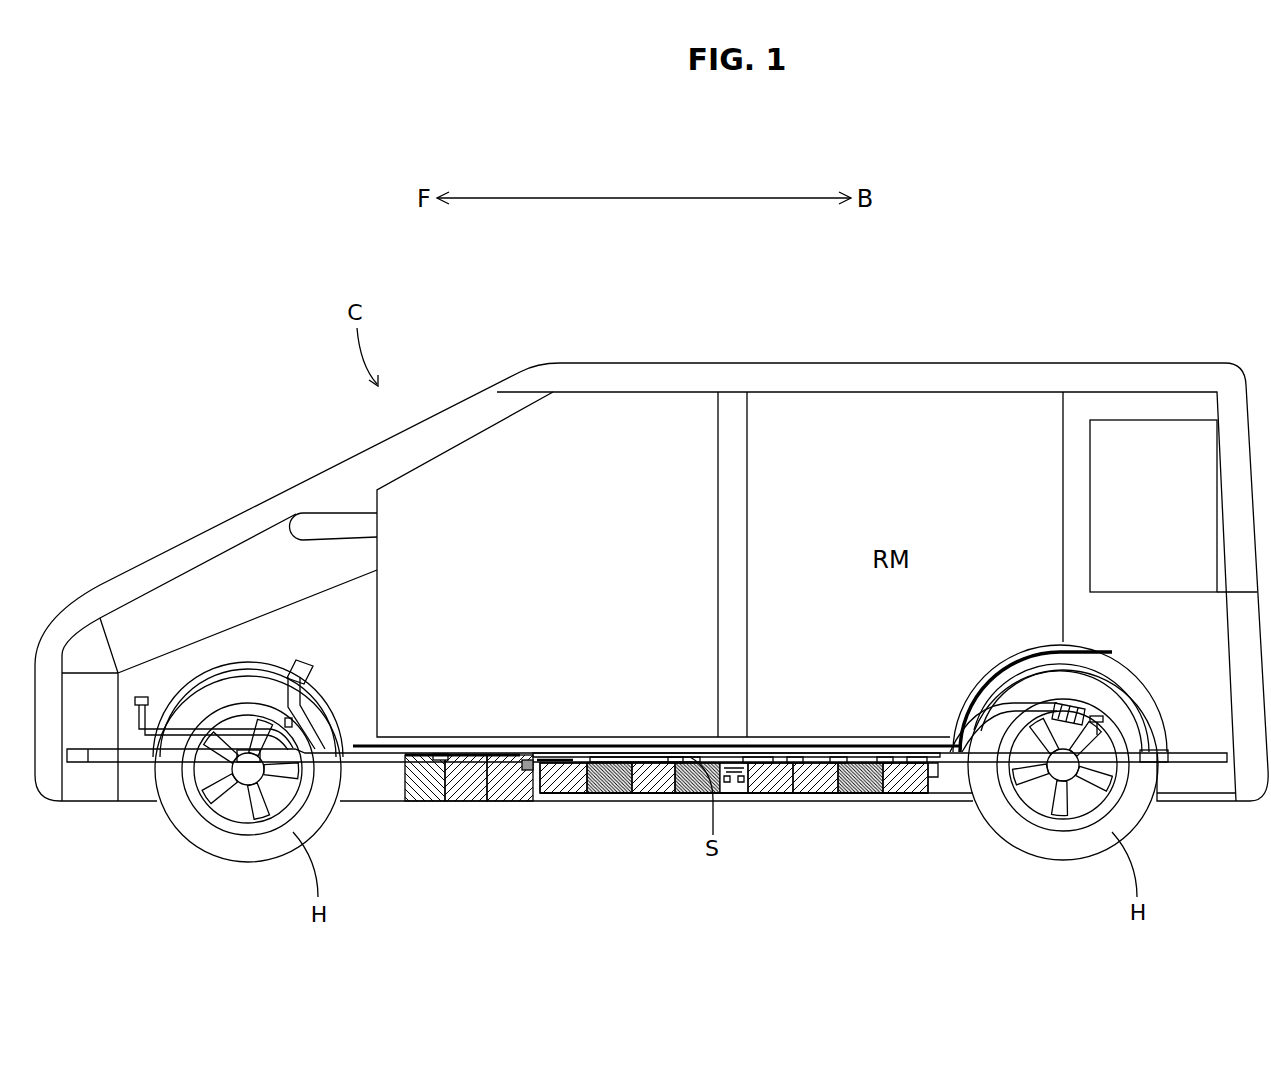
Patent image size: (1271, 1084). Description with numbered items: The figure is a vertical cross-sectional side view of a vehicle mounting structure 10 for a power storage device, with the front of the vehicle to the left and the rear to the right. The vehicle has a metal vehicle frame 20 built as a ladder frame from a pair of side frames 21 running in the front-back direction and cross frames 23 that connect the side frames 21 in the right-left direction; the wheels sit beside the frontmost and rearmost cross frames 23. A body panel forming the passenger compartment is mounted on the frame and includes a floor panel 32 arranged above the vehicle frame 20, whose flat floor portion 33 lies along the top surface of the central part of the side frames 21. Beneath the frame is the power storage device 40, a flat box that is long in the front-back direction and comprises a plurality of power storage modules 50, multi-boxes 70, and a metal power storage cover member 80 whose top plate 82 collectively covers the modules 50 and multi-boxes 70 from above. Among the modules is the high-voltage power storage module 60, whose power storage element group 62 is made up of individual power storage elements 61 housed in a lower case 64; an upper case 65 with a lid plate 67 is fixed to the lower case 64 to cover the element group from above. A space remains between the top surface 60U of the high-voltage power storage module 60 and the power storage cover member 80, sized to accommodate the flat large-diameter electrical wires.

The vehicle lower structure 10 is at (699, 860).
The vehicle frame 20 is at (647, 828).
The side frames 21 is at (193, 758).
The cross frames 23 is at (248, 758).
The floor panel 32 is at (805, 728).
The floor portion 33 is at (656, 829).
The power storage device 40 is at (485, 845).
The power storage modules 50 is at (759, 618).
The high-voltage power storage module 60 is at (759, 618).
The top surface of high-voltage power storage module 60U is at (858, 765).
The power storage elements 61 is at (807, 778).
The power storage element group 62 is at (905, 821).
The lower case 64 is at (607, 797).
The upper case 65 is at (615, 761).
The lid plate 67 is at (661, 529).
The multi-boxes 70 is at (467, 778).
The power storage cover member 80 is at (700, 753).
The top plate 82 is at (736, 528).